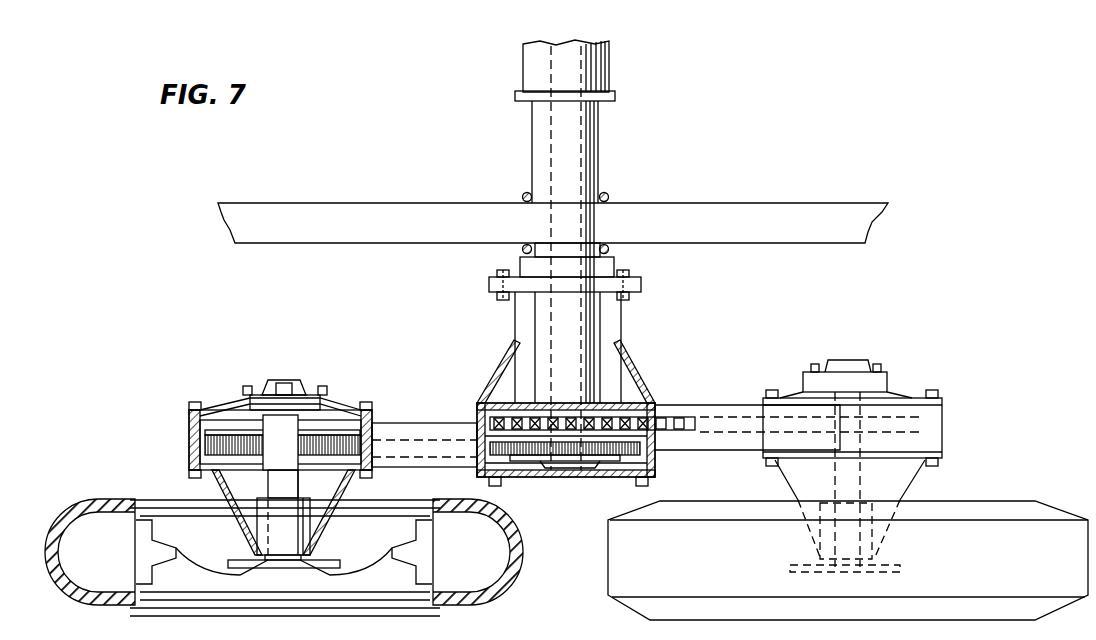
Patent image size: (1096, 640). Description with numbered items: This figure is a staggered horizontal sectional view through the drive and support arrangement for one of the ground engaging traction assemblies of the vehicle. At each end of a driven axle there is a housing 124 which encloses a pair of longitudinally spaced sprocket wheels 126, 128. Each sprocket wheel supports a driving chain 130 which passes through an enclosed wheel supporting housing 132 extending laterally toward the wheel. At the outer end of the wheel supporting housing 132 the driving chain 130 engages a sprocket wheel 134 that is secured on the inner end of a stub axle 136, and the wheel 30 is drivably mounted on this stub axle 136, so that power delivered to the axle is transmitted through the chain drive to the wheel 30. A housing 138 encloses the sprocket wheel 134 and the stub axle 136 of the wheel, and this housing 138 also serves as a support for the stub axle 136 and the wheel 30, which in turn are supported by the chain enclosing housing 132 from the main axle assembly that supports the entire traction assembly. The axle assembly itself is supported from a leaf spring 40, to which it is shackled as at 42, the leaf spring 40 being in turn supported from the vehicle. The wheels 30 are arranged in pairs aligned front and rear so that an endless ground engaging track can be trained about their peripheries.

The wheel 30 is at (522, 582).
The leaf spring 40 is at (715, 210).
The shackle 42 is at (612, 197).
The housing 124 is at (635, 372).
The sprocket wheel 126 is at (478, 418).
The sprocket wheel 128 is at (599, 456).
The driving chain 130 is at (508, 450).
The wheel supporting housing 132 is at (410, 465).
The sprocket wheel 134 is at (318, 440).
The stub axle 136 is at (277, 476).
The housing 138 is at (208, 410).